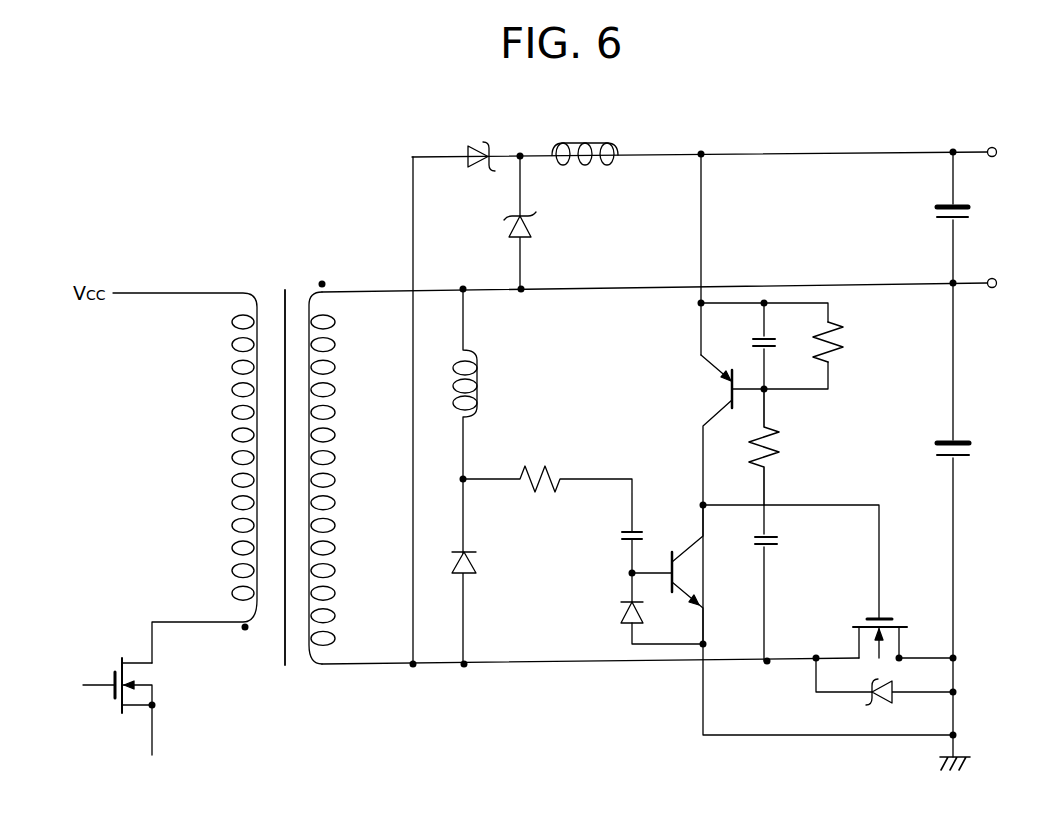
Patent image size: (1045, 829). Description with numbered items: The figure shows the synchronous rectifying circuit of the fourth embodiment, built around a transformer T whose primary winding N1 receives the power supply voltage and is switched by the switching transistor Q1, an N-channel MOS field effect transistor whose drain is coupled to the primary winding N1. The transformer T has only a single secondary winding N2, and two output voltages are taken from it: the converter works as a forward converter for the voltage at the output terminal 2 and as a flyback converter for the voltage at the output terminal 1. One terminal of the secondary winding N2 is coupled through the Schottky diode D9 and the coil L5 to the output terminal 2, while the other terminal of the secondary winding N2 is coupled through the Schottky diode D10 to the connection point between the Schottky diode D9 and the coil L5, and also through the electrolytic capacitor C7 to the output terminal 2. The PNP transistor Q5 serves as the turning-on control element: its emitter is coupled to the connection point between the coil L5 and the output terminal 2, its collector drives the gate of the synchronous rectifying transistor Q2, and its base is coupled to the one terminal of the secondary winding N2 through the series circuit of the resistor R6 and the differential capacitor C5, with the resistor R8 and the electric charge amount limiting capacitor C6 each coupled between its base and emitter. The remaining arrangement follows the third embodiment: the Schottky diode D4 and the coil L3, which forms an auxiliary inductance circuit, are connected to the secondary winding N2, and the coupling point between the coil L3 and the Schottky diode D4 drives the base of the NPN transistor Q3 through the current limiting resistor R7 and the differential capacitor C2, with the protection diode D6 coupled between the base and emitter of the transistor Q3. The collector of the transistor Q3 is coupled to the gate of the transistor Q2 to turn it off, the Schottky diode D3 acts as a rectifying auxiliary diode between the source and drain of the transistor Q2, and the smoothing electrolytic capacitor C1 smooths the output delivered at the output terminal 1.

The output terminal 1 is at (994, 289).
The output terminal 2 is at (989, 147).
The transformer T is at (283, 465).
The primary winding N1 is at (185, 478).
The secondary winding N2 is at (359, 473).
The switching transistor Q1 is at (132, 697).
The synchronous rectifying transistor Q2 is at (892, 629).
The transistor Q3 is at (698, 574).
The transistor Q5 is at (721, 430).
The Schottky diode D3 is at (884, 694).
The Schottky diode D4 is at (479, 562).
The protection diode D6 is at (649, 623).
The Schottky diode D9 is at (480, 144).
The Schottky diode D10 is at (537, 225).
The coil L3 is at (478, 476).
The coil L5 is at (585, 141).
The resistor R6 is at (778, 447).
The current limiting resistor R7 is at (546, 485).
The resistor R8 is at (841, 342).
The smoothing electrolytic capacitor C1 is at (962, 451).
The differential capacitor C2 is at (619, 549).
The differential capacitor C5 is at (781, 583).
The electric charge amount limiting capacitor C6 is at (749, 346).
The electrolytic capacitor C7 is at (960, 217).